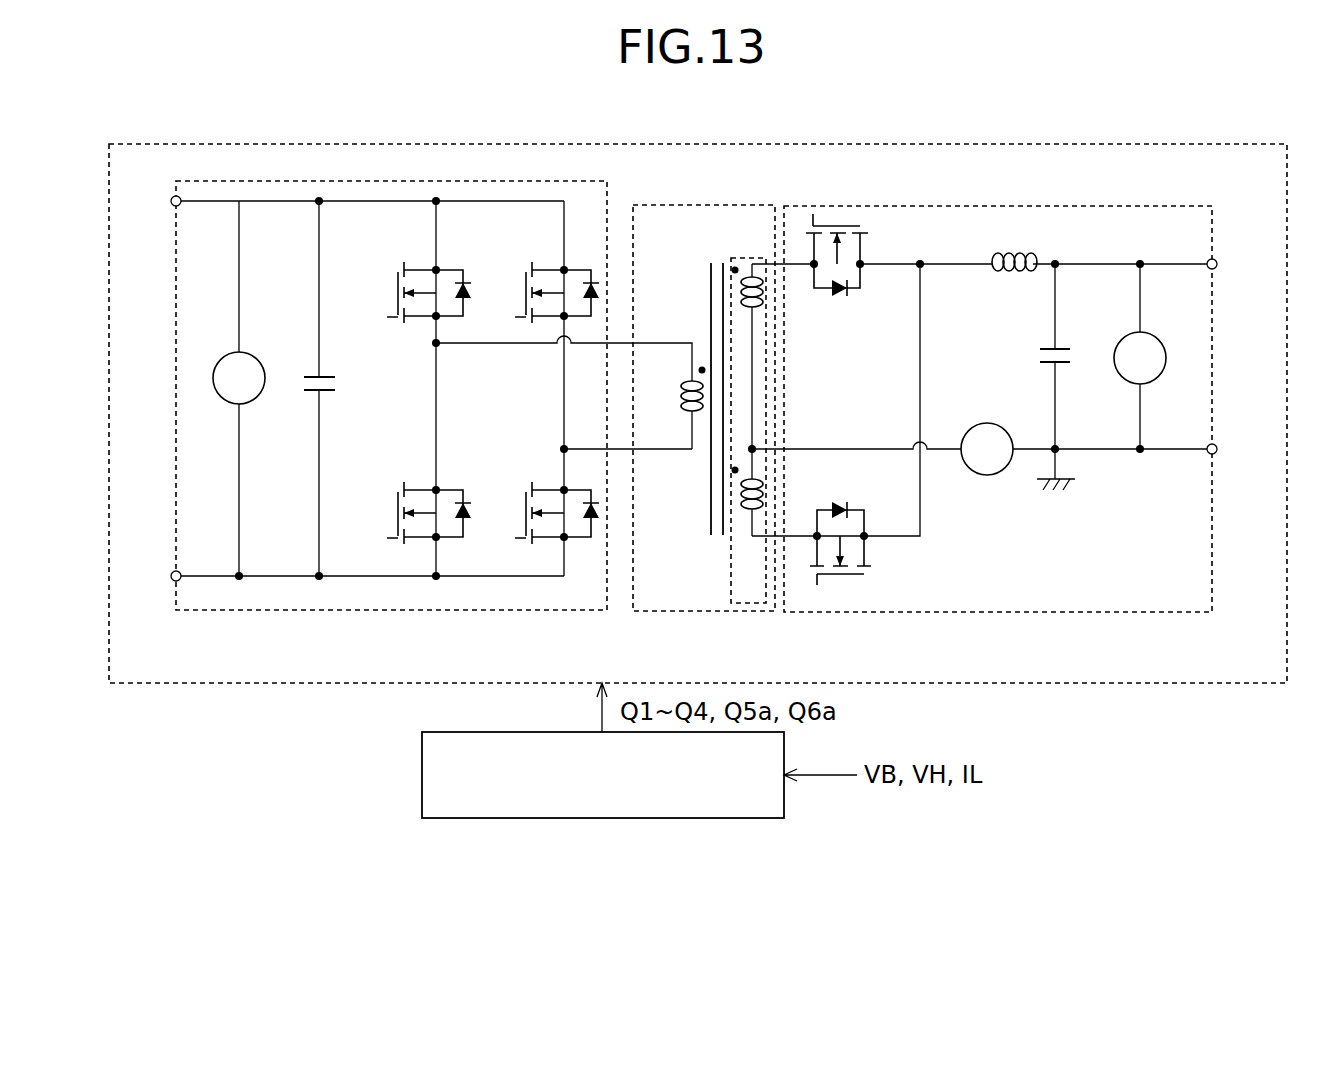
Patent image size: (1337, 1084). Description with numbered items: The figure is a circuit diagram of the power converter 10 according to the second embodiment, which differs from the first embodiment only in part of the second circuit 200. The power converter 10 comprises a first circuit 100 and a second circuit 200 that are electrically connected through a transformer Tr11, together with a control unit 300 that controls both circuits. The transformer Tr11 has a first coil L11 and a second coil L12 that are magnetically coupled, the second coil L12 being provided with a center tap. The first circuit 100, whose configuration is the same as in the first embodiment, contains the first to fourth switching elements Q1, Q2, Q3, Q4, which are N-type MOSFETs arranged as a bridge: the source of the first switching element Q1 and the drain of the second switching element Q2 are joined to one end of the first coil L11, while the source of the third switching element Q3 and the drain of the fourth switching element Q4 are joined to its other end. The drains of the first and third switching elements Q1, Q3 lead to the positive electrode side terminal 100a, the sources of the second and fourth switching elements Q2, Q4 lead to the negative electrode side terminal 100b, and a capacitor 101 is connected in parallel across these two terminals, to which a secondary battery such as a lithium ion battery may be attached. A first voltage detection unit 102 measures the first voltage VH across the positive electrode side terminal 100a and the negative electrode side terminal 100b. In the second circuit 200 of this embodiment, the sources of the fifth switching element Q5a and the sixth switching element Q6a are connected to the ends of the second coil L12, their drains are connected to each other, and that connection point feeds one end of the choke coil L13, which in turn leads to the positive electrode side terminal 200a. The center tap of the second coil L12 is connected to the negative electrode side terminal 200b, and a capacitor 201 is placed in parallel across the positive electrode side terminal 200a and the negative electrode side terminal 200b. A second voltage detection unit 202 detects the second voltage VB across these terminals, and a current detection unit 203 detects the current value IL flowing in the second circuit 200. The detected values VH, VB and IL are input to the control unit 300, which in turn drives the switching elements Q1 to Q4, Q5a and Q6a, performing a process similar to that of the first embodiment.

The power converter 10 is at (634, 144).
The first circuit 100 is at (607, 181).
The positive electrode side terminal 100a is at (170, 198).
The negative electrode side terminal 100b is at (170, 577).
The capacitor 101 is at (324, 362).
The first voltage detection unit 102 is at (220, 359).
The first switching element Q1 is at (398, 272).
The second switching element Q2 is at (398, 492).
The third switching element Q3 is at (526, 272).
The fourth switching element Q4 is at (526, 492).
The transformer Tr11 is at (703, 205).
The first coil L11 is at (680, 396).
The second coil L12 is at (745, 258).
The choke coil L13 is at (1013, 272).
The fifth switching element Q5a is at (833, 226).
The sixth switching element Q6a is at (852, 578).
The second circuit 200 is at (922, 206).
The positive electrode side terminal 200a is at (1216, 259).
The negative electrode side terminal 200b is at (1217, 455).
The capacitor 201 is at (1095, 333).
The second voltage detection unit 202 is at (1157, 340).
The current detection unit 203 is at (1007, 429).
The control unit 300 is at (685, 819).